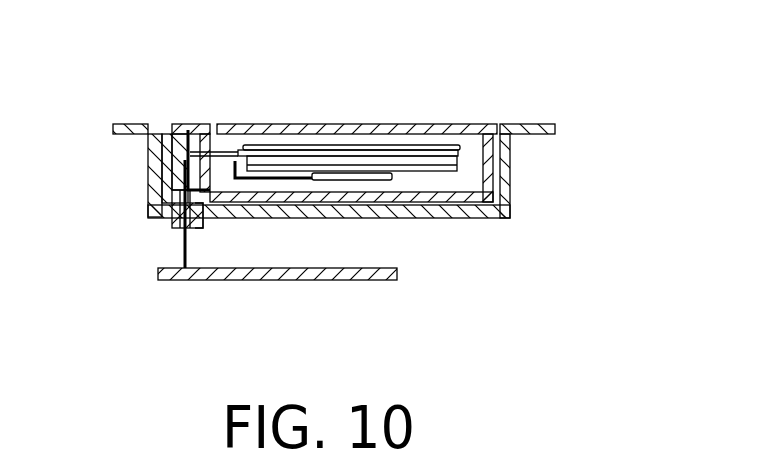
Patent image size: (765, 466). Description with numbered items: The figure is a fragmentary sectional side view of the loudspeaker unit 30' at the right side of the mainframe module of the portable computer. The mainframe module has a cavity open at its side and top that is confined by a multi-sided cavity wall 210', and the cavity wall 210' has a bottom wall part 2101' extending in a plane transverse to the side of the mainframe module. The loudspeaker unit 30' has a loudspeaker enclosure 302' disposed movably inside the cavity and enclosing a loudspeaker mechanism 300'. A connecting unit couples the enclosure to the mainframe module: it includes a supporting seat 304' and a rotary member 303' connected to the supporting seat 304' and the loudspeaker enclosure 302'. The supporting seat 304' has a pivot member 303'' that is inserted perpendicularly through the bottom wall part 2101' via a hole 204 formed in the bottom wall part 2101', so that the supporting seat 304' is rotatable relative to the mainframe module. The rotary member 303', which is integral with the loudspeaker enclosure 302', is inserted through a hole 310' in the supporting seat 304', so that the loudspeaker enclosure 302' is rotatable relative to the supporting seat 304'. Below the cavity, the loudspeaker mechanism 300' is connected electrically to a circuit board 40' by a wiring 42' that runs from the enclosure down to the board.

The loudspeaker unit 30' is at (335, 175).
The cavity wall 210' is at (377, 199).
The bottom wall part 2101' is at (329, 240).
The loudspeaker enclosure 302' is at (374, 95).
The supporting seat 304' is at (327, 129).
The hole 310' is at (150, 124).
The loudspeaker mechanism 300' is at (339, 118).
The rotary member 303' is at (120, 204).
The pivot member 303'' is at (116, 248).
The wiring 42' is at (146, 253).
The hole 204 is at (205, 222).
The circuit board 40' is at (323, 307).